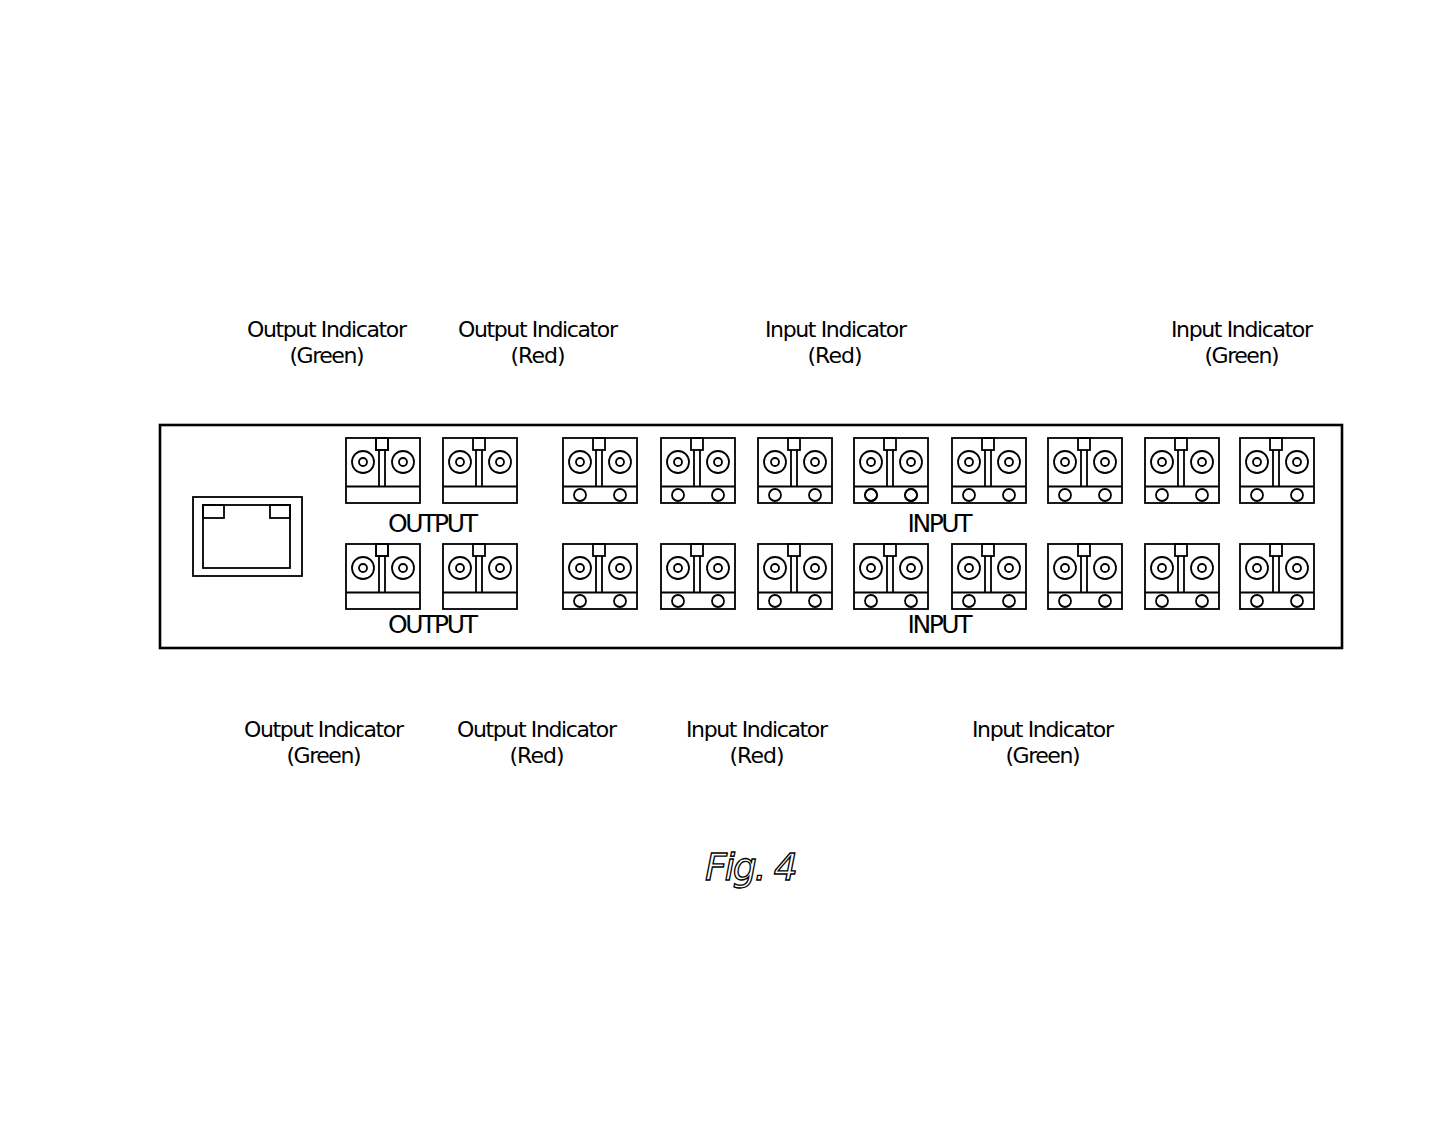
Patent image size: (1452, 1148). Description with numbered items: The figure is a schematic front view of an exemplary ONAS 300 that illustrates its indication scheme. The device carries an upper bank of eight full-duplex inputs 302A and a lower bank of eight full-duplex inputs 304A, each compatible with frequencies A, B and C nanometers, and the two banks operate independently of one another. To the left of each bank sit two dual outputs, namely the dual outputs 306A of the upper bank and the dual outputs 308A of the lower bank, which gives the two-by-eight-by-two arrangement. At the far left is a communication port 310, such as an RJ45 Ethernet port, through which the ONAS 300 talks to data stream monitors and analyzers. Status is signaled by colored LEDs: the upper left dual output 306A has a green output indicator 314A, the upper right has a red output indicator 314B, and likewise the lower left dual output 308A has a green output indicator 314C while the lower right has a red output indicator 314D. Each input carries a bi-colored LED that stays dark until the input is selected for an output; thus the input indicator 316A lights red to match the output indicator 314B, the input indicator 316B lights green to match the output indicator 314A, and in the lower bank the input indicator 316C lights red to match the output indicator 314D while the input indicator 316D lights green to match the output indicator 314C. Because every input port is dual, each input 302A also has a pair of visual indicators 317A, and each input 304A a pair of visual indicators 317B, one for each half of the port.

The ONAS 300 is at (1105, 295).
The full-duplex input 302A is at (1314, 472).
The full-duplex input 304A is at (1314, 575).
The dual output 306A is at (346, 470).
The dual output 308A is at (346, 578).
The communication port 310 is at (193, 537).
The green output indicator 314A is at (382, 438).
The red output indicator 314B is at (479, 438).
The green output indicator 314C is at (382, 552).
The red output indicator 314D is at (480, 552).
The input indicator 316A is at (890, 438).
The input indicator 316B is at (1181, 438).
The input indicator 316C is at (698, 552).
The input indicator 316D is at (989, 552).
The visual indicators 317A is at (873, 489).
The visual indicators 317B is at (872, 607).